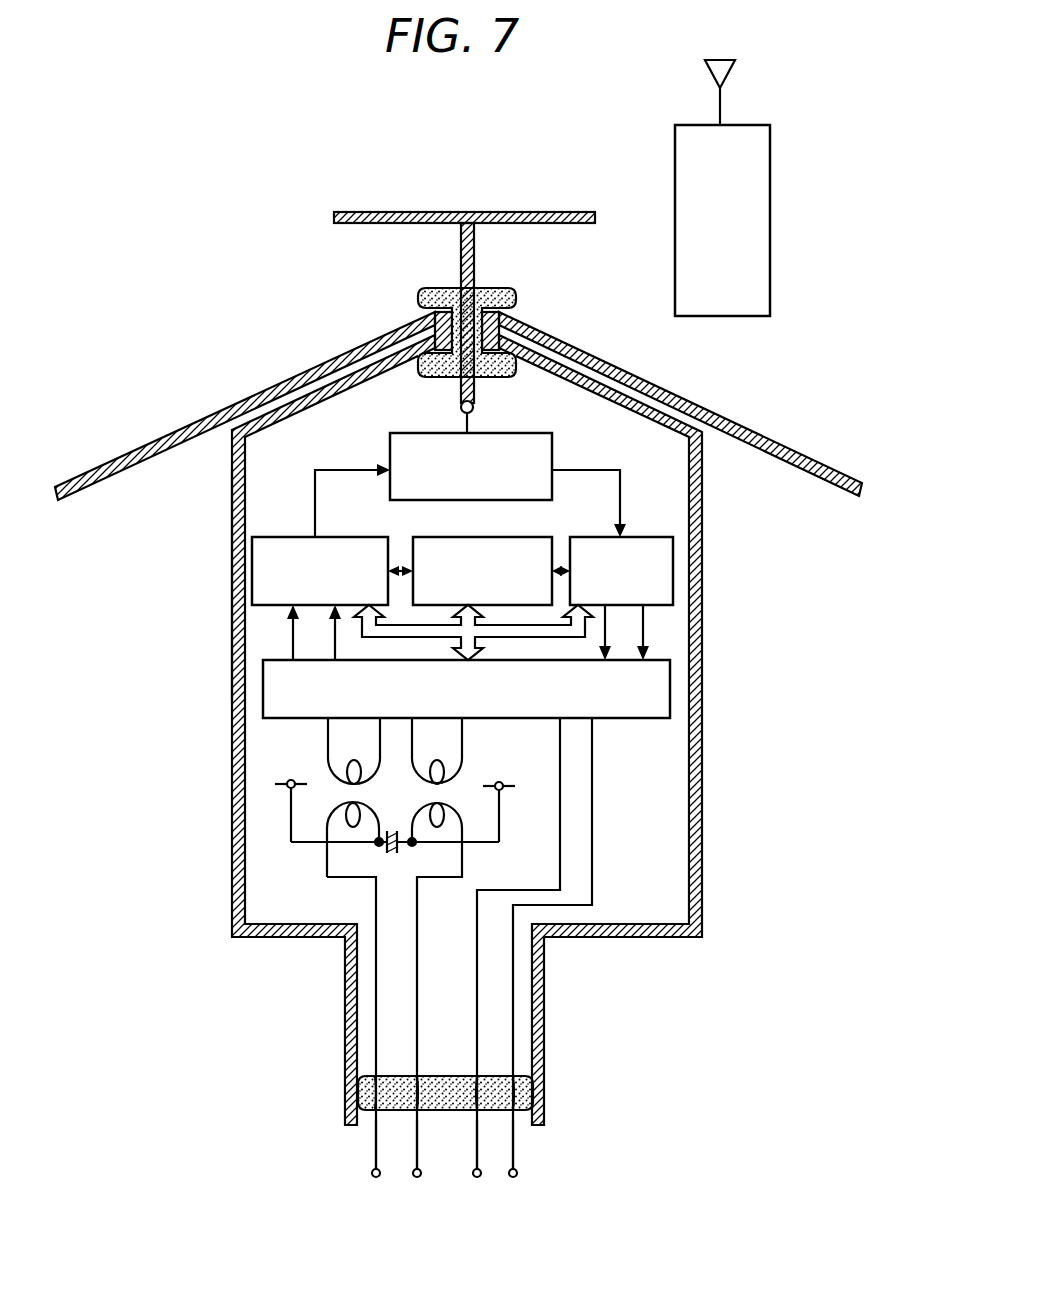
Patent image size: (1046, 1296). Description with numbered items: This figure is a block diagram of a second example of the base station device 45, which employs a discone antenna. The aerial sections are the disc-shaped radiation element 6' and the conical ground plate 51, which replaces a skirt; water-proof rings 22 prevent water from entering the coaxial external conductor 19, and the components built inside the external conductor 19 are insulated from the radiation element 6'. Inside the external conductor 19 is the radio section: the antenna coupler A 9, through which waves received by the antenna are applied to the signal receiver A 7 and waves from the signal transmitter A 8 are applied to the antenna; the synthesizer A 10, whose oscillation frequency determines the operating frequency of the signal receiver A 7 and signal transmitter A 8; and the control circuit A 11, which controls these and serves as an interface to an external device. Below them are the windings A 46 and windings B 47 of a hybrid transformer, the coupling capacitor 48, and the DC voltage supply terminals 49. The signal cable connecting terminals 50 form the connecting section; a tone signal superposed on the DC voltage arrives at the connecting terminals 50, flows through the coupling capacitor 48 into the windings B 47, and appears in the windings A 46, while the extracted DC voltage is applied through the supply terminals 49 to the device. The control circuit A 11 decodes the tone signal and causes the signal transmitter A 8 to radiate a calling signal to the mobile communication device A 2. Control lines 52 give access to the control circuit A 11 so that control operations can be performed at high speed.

The mobile communication device A 2 is at (770, 140).
The disc-shaped radiation element 6' is at (465, 290).
The water-proof rings 22 is at (502, 288).
The conical ground plate 51 is at (213, 412).
The base station device 45 is at (712, 642).
The coaxial external conductor 19 is at (232, 580).
The antenna coupler A 9 is at (535, 433).
The signal transmitter A 8 is at (368, 537).
The synthesizer A 10 is at (508, 537).
The signal receiver A 7 is at (648, 537).
The control circuit A 11 is at (655, 718).
The windings A 46 is at (328, 745).
The DC voltage supply terminals 49 is at (289, 788).
The windings B 47 is at (327, 862).
The coupling capacitor 48 is at (388, 857).
The signal cable connecting terminals 50 is at (376, 1152).
The control lines 52 is at (515, 1152).